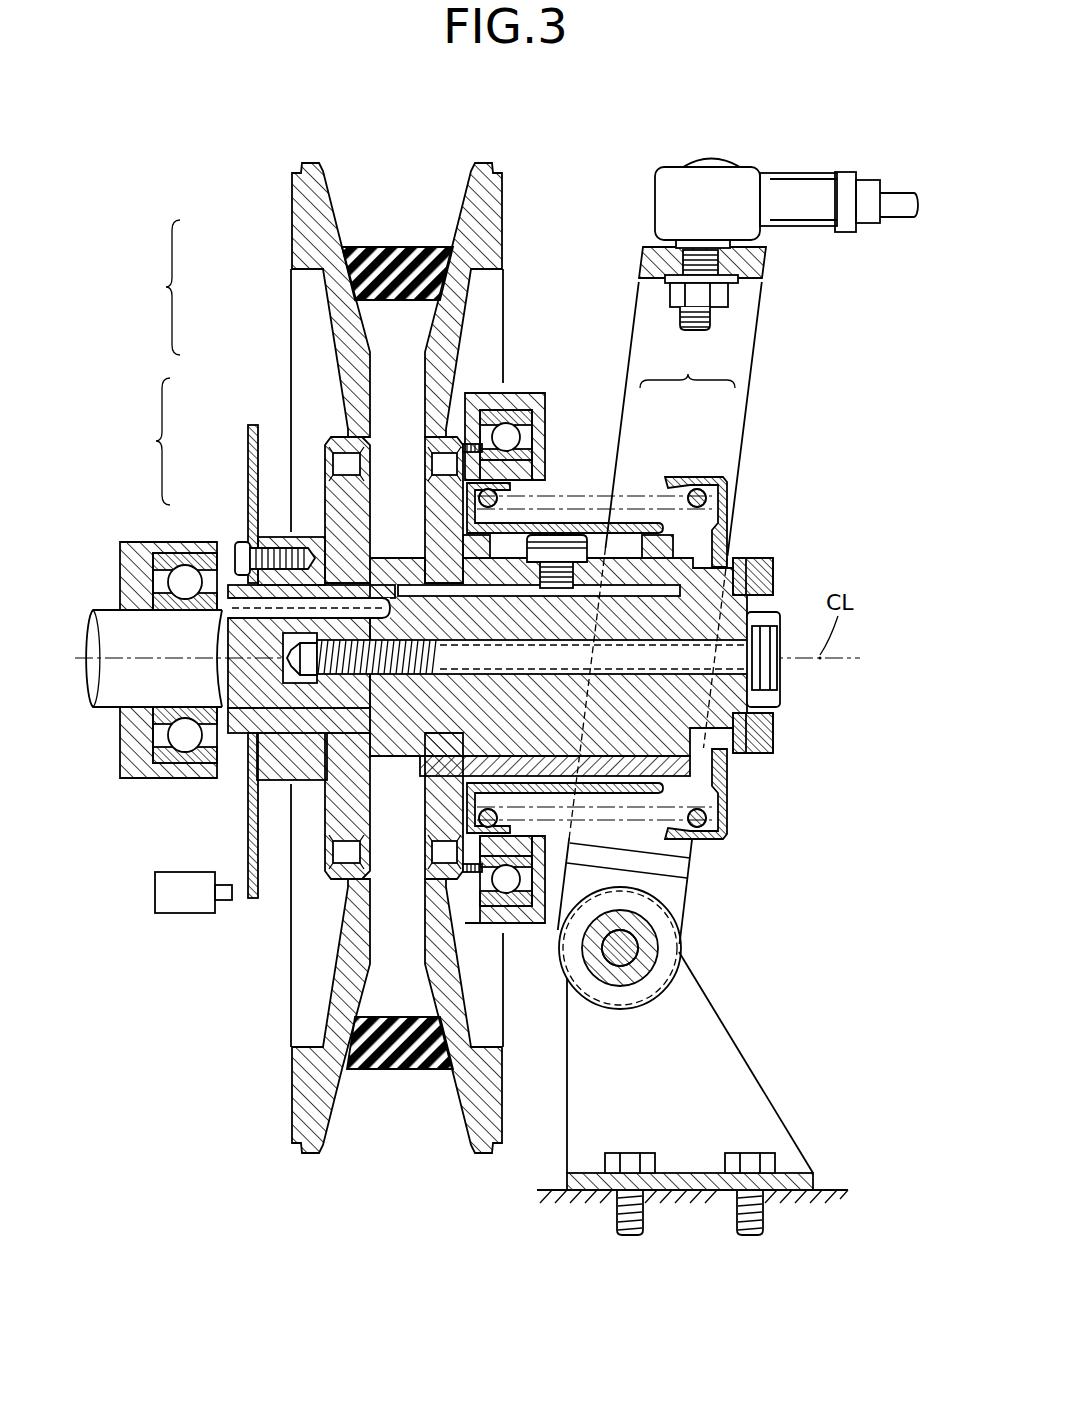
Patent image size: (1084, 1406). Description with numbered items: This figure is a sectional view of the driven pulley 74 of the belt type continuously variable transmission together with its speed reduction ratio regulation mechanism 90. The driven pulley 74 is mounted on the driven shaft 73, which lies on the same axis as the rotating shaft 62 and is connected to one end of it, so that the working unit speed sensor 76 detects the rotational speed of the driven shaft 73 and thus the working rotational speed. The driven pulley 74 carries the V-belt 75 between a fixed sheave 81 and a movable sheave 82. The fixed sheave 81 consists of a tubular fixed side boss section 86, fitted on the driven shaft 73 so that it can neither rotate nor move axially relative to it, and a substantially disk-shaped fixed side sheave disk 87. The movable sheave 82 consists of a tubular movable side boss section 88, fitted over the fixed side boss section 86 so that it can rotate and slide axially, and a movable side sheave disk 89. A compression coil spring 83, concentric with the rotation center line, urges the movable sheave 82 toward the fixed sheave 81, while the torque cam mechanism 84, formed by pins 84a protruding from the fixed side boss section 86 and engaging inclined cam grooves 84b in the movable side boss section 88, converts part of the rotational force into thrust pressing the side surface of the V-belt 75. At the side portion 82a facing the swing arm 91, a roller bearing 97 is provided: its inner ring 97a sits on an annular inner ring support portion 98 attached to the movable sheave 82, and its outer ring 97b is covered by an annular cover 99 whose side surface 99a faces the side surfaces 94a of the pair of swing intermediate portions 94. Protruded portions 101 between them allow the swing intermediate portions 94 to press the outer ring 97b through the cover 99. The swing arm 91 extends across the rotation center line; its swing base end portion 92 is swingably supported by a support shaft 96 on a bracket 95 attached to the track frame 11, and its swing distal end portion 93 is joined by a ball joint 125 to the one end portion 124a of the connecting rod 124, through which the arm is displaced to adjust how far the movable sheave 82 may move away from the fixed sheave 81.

The track frame 11 is at (830, 1188).
The rotating shaft 62 is at (110, 697).
The driven shaft 73 is at (738, 693).
The driven pulley 74 is at (212, 197).
The V-belt 75 is at (394, 246).
The working unit speed sensor 76 is at (188, 902).
The fixed sheave 81 is at (264, 638).
The movable sheave 82 is at (318, 658).
The side portion 82a is at (468, 411).
The coil spring 83 is at (630, 553).
The torque cam mechanism 84 is at (604, 595).
The pin 84a is at (582, 512).
The cam groove 84b is at (697, 472).
The fixed side boss section 86 is at (390, 562).
The fixed side sheave disk 87 is at (350, 435).
The movable side boss section 88 is at (368, 447).
The movable side sheave disk 89 is at (427, 347).
The speed reduction ratio regulation mechanism 90 is at (741, 164).
The swing arm 91 is at (745, 401).
The swing base end portion 92 is at (720, 626).
The swing distal end portion 93 is at (735, 270).
The swing intermediate portion 94 is at (728, 480).
The side surface 94a is at (634, 294).
The bracket 95 is at (686, 1061).
The support shaft 96 is at (640, 946).
The roller bearing 97 is at (508, 424).
The inner ring 97a is at (534, 455).
The outer ring 97b is at (545, 395).
The inner ring support portion 98 is at (536, 478).
The cover 99 is at (538, 610).
The side surface 99a is at (543, 425).
The protruded portion 101 is at (746, 748).
The connecting rod 124 is at (839, 160).
The one end portion 124a is at (871, 167).
The ball joint 125 is at (710, 176).